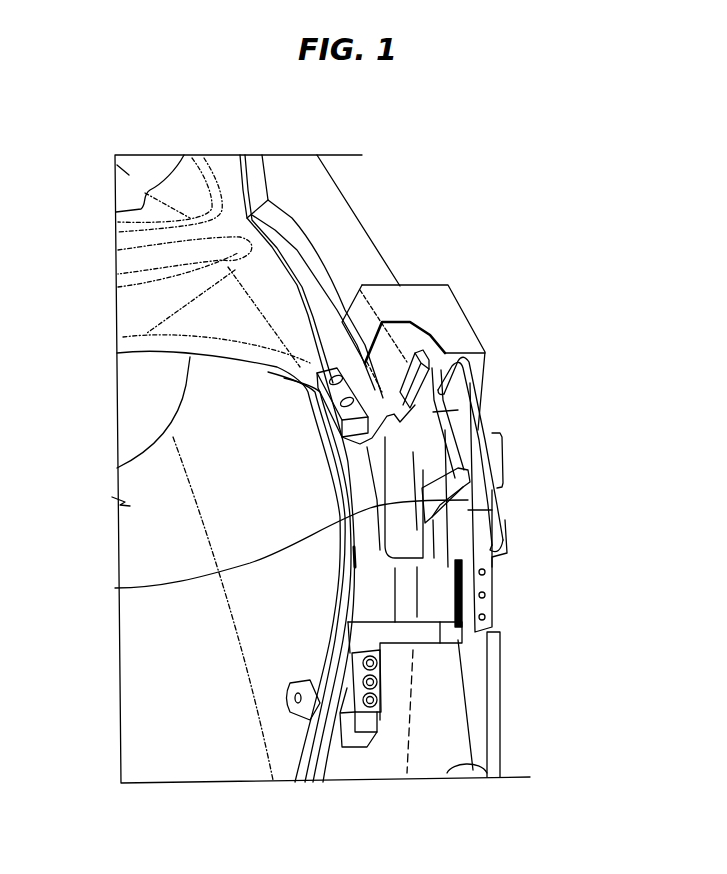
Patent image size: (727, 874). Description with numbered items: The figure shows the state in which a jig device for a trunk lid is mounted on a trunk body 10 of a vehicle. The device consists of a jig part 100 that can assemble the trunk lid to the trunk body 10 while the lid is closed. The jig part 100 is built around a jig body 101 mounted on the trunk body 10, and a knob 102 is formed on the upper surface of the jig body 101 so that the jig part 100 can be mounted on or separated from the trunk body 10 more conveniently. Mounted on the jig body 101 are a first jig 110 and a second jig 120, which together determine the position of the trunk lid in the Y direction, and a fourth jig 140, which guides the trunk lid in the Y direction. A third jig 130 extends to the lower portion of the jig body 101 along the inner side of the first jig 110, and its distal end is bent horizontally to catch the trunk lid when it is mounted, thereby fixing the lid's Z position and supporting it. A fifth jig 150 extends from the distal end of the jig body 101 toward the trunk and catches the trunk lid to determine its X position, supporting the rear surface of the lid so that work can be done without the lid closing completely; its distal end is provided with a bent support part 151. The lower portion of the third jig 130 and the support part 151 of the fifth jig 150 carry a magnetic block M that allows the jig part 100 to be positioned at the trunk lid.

The trunk body 10 is at (357, 247).
The jig part 100 is at (532, 258).
The jig body 101 is at (465, 433).
The knob 102 is at (115, 588).
The first jig 110 is at (477, 343).
The second jig 120 is at (500, 453).
The third jig 130 is at (372, 403).
The fourth jig 140 is at (415, 352).
The fifth jig 150 is at (380, 670).
The support part 151 is at (363, 722).
The magnetic block M is at (357, 377).